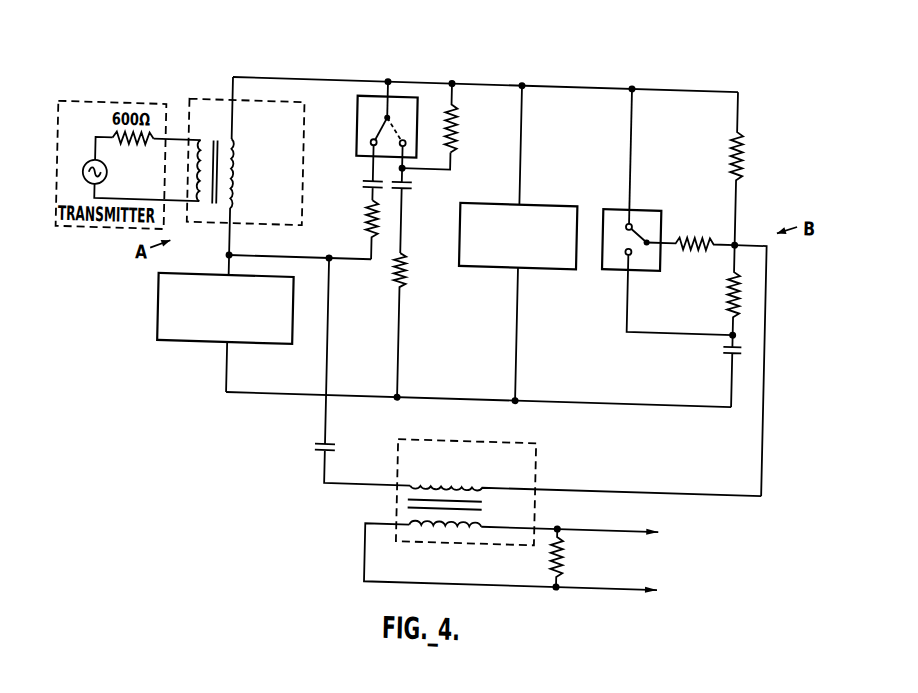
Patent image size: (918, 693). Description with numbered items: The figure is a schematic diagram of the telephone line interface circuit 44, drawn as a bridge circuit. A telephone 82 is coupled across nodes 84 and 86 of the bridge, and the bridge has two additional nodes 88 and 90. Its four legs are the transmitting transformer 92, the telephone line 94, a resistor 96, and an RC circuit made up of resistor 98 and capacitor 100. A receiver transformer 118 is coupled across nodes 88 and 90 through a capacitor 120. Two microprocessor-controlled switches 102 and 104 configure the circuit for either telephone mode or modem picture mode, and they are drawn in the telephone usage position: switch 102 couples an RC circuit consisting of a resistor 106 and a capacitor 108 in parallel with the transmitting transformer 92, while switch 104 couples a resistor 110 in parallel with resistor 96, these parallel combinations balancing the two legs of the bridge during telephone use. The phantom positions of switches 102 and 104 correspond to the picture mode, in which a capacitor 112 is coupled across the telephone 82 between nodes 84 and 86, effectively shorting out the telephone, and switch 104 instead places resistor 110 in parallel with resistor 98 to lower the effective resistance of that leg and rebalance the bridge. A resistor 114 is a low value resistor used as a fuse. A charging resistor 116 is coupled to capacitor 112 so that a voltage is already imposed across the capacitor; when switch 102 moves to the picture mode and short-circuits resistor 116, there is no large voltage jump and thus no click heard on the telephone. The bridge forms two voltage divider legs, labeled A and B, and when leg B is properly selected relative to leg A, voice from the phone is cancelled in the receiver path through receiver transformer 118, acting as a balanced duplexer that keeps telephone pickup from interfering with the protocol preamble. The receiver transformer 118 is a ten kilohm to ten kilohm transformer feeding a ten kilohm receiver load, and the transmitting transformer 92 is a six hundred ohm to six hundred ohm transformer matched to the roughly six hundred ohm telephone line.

The telephone line interface circuit 44 is at (752, 26).
The transmitting transformer 92 is at (198, 101).
The node 88 is at (229, 255).
The telephone line 94 is at (294, 271).
The capacitor 120 is at (335, 437).
The switch 102 is at (358, 114).
The capacitor 108 is at (364, 181).
The resistor 106 is at (368, 218).
The capacitor 112 is at (414, 180).
The resistor 114 is at (408, 273).
The charging resistor 116 is at (459, 123).
The node 84 is at (522, 77).
The telephone 82 is at (548, 196).
The node 86 is at (522, 392).
The switch 104 is at (643, 198).
The resistor 110 is at (691, 223).
The resistor 96 is at (744, 150).
The node 90 is at (739, 228).
The resistor 98 is at (732, 277).
The capacitor 100 is at (728, 337).
The receiver transformer 118 is at (541, 440).